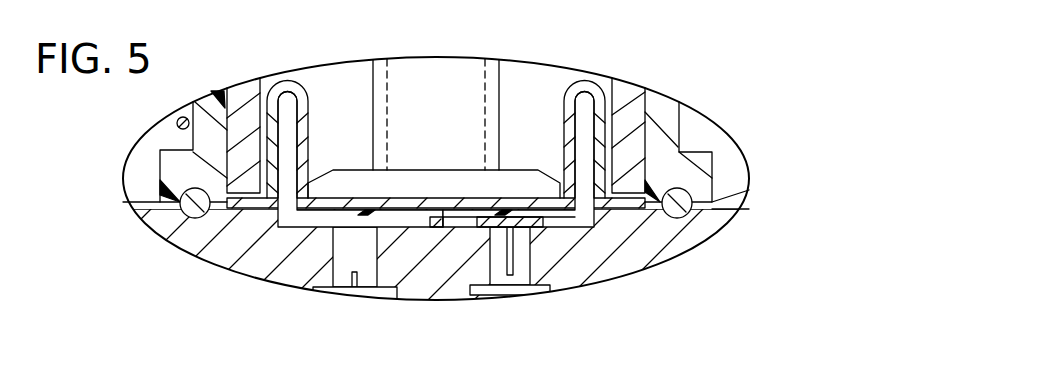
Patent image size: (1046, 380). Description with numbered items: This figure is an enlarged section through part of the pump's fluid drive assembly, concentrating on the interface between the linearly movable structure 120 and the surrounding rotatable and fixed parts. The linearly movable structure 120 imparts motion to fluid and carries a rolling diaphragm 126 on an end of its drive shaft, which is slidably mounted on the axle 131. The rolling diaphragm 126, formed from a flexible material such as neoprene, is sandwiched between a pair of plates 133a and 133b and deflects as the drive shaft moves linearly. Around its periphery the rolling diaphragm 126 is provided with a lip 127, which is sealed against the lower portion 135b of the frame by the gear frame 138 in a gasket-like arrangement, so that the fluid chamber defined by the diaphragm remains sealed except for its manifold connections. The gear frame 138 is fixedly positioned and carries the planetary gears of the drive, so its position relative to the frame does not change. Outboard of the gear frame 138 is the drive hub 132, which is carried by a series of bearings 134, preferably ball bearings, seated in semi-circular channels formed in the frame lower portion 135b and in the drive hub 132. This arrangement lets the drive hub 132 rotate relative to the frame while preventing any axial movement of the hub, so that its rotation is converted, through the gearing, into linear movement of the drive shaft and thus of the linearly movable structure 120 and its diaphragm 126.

The linearly movable structure 120 is at (433, 57).
The rolling diaphragm 126 is at (288, 80).
The lip 127 is at (607, 207).
The axle 131 is at (430, 227).
The drive hub 132 is at (700, 150).
The plate 133a is at (520, 170).
The plate 133b is at (310, 217).
The bearing 134 is at (680, 218).
The lower portion of the frame 135b is at (735, 223).
The gear frame 138 is at (628, 82).